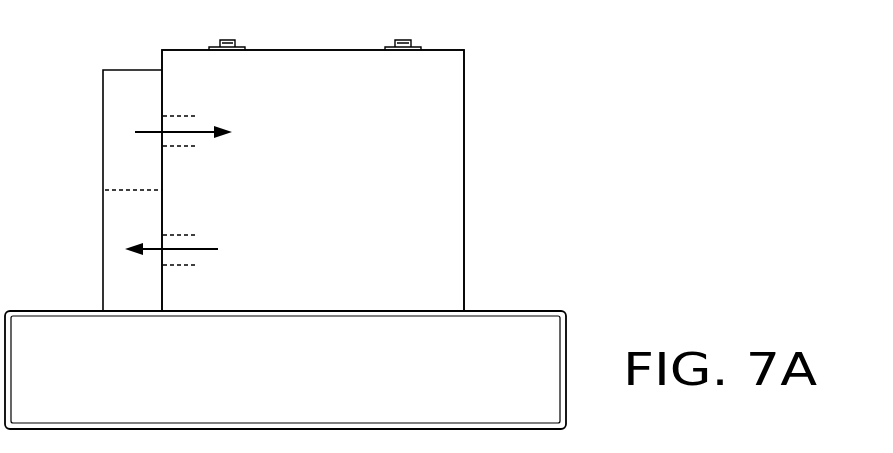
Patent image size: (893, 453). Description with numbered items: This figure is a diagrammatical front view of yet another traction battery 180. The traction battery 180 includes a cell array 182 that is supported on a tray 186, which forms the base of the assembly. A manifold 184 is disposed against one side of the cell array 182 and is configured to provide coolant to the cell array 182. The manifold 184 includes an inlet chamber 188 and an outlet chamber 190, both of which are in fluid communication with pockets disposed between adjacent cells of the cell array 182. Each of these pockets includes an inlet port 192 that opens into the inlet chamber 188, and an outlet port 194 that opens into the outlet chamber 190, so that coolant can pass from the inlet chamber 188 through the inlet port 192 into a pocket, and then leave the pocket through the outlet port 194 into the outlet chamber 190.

The traction battery 180 is at (498, 60).
The cell array 182 is at (464, 128).
The manifold 184 is at (130, 70).
The tray 186 is at (510, 311).
The inlet chamber 188 is at (132, 145).
The outlet chamber 190 is at (132, 223).
The inlet port 192 is at (188, 117).
The outlet port 194 is at (188, 236).